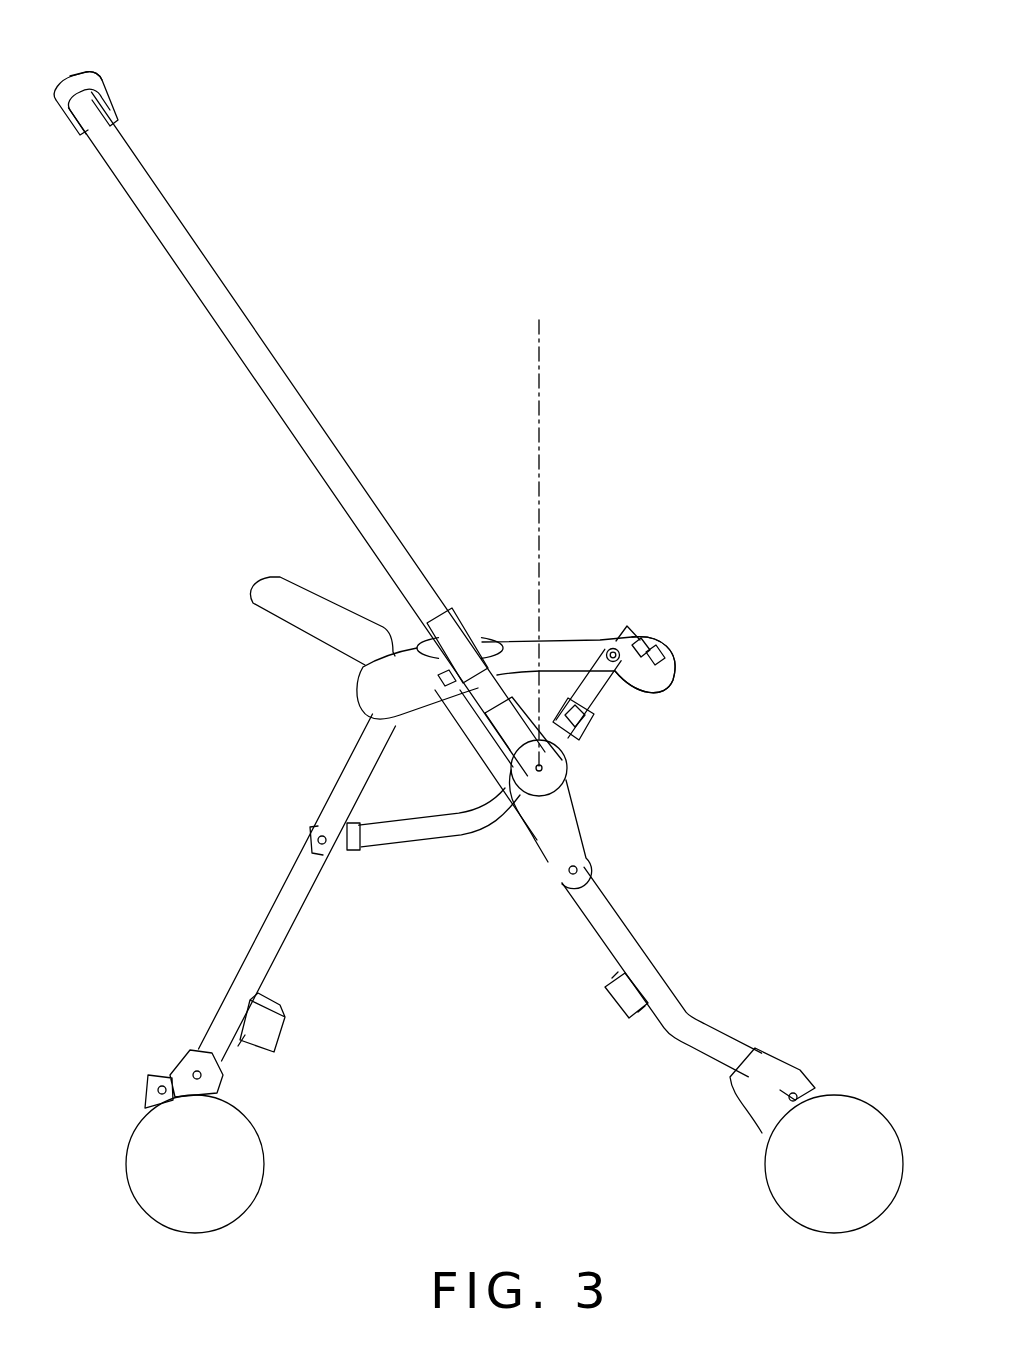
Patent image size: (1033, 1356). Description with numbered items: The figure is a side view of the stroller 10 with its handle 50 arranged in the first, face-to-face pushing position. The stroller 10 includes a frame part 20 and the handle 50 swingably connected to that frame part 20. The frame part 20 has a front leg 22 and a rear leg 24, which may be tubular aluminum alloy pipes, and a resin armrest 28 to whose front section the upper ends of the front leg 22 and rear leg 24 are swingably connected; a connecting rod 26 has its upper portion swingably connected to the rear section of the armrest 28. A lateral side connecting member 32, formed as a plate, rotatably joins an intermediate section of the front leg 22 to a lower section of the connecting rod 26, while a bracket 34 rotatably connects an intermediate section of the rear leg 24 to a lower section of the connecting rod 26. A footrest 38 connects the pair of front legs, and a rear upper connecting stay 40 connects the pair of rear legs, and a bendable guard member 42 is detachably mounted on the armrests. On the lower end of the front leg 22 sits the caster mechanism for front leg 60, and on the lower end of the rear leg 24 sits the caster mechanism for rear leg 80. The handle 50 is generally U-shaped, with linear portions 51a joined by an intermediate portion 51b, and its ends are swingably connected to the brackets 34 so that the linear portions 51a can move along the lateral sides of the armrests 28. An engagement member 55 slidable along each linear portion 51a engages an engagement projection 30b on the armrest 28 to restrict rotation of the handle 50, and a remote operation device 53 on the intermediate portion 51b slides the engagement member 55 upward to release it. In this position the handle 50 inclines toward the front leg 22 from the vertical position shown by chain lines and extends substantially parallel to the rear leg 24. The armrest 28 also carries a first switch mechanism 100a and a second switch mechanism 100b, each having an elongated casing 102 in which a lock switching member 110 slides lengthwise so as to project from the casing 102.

The stroller 10 is at (729, 466).
The frame part 20 is at (722, 806).
The front leg 22 is at (253, 949).
The rear leg 24 is at (635, 946).
The connecting rod 26 is at (600, 700).
The armrest 28 is at (561, 650).
The engagement projection 30b is at (612, 648).
The lateral side connecting member 32 is at (418, 828).
The bracket 34 is at (557, 853).
The footrest 38 is at (266, 1040).
The rear upper connecting stay 40 is at (620, 1000).
The guard member 42 is at (275, 585).
The handle 50 is at (280, 275).
The linear portion 51a is at (313, 424).
The intermediate portion 51b is at (94, 123).
The remote operation device 53 is at (83, 73).
The engagement member 55 is at (455, 622).
The caster mechanism for front leg 60 is at (282, 1183).
The caster mechanism for rear leg 80 is at (752, 1184).
The first switch mechanism 100a is at (418, 693).
The second switch mechanism 100b is at (672, 655).
The casing 102 is at (658, 648).
The lock switching member 110 is at (645, 642).